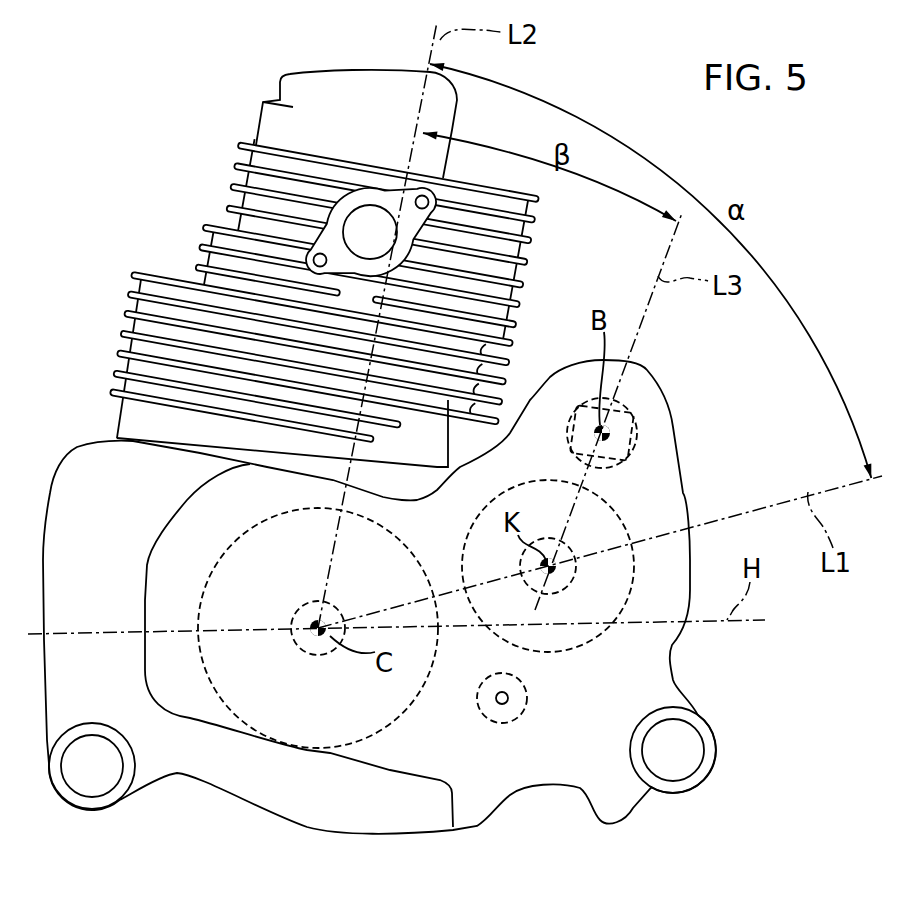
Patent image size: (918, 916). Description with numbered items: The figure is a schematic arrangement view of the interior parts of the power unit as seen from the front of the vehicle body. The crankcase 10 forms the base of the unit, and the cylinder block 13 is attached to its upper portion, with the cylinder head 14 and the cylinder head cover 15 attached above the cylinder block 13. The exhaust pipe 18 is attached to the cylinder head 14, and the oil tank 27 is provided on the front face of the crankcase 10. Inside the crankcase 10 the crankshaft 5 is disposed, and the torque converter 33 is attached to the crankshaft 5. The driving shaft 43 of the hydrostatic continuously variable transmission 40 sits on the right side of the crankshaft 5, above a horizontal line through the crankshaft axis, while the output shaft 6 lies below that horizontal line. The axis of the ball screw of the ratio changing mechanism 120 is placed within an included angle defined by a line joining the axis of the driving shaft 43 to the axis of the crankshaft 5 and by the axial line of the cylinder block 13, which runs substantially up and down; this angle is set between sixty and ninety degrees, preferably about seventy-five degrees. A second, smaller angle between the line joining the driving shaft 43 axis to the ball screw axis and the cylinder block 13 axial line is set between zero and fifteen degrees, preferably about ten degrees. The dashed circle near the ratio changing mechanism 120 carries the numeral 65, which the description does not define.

The crankcase 10 is at (61, 468).
The oil tank 27 is at (143, 563).
The cylinder block 13 is at (124, 315).
The cylinder head 14 is at (236, 169).
The cylinder head cover 15 is at (307, 72).
The exhaust pipe 18 is at (375, 188).
The torque converter 33 is at (415, 701).
The crankshaft 5 is at (332, 606).
The hydrostatic continuously variable transmission 40 is at (622, 494).
The driving shaft 43 is at (570, 546).
The oil pump (64) 65 is at (640, 402).
The ratio changing mechanism 120 is at (646, 422).
The output shaft 6 is at (527, 703).